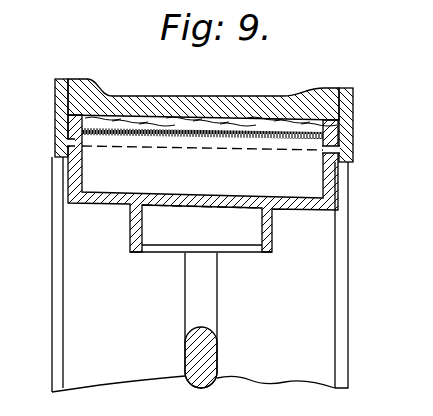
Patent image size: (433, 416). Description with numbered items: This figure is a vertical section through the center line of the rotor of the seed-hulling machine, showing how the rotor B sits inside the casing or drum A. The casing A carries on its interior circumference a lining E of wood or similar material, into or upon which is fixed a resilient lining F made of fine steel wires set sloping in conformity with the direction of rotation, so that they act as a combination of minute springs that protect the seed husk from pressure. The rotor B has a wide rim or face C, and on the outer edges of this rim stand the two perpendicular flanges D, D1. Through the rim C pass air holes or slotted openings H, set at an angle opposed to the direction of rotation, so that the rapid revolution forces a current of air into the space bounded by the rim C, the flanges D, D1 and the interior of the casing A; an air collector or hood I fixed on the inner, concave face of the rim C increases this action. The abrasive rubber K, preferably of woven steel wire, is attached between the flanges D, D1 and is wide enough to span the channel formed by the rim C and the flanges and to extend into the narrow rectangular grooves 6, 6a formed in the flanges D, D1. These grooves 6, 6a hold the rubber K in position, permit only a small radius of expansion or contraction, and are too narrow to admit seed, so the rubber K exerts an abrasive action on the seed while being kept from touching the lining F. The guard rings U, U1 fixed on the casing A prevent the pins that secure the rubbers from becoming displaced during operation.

The casing or drum A is at (203, 114).
The perpendicular flange D is at (67, 112).
The perpendicular flange D1 is at (341, 123).
The rim or face of rotor C is at (310, 211).
The groove or channel 6 is at (72, 143).
The groove or channel 6a is at (340, 152).
The guard ring U is at (58, 150).
The guard ring U1 is at (352, 160).
The lining E is at (233, 130).
The resilient lining F is at (263, 133).
The rubber K is at (202, 165).
The air hole or slotted opening H is at (202, 225).
The air collector or hood I is at (247, 255).
The rotor B is at (201, 320).